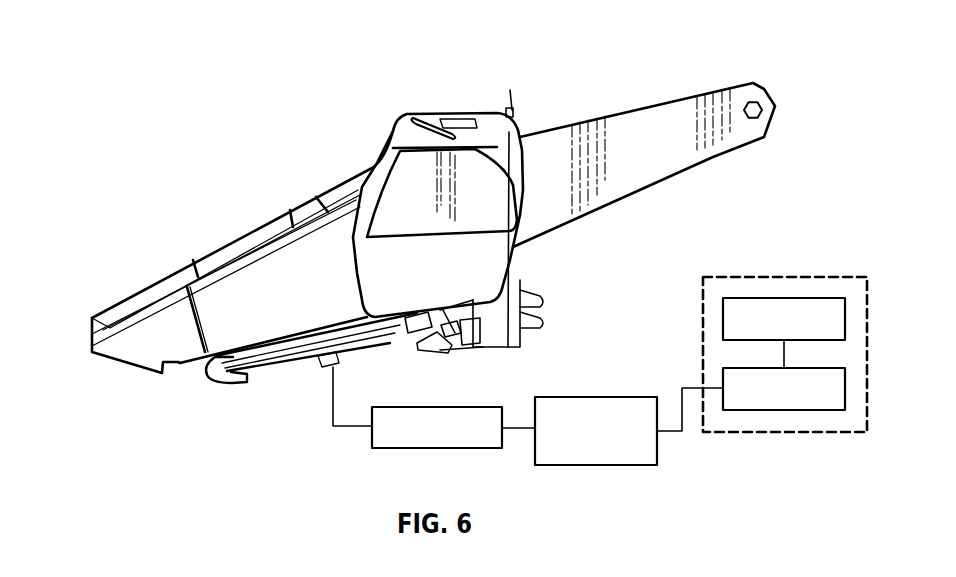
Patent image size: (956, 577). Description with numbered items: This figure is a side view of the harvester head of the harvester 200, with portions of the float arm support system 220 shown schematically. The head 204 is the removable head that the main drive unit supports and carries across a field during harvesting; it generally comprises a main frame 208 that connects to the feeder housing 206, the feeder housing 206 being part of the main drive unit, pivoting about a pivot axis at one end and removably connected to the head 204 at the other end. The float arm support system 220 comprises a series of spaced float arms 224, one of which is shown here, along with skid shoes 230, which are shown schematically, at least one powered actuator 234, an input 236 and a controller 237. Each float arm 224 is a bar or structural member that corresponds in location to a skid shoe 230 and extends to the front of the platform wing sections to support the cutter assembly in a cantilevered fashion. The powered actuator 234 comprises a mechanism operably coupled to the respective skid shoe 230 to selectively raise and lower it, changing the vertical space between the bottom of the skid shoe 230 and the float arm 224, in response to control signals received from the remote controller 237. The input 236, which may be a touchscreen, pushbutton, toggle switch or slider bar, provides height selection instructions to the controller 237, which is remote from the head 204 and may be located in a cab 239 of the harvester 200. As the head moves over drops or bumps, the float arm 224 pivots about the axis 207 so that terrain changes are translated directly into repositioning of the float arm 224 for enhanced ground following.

The harvester 200 is at (423, 232).
The head 204 is at (417, 107).
The feeder housing 206 is at (644, 140).
The axis 207 is at (763, 93).
The main frame 208 is at (493, 123).
The float arm support system 220 is at (600, 376).
The float arm 224 is at (293, 374).
The skid shoe 230 is at (437, 406).
The powered actuator 234 is at (600, 395).
The input 236 is at (723, 320).
The controller 237 is at (723, 377).
The cab 239 is at (756, 338).